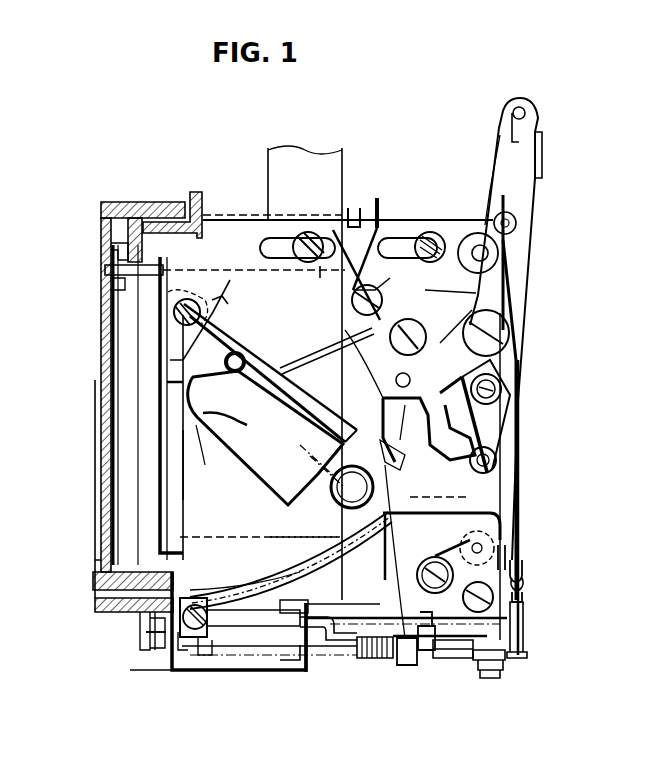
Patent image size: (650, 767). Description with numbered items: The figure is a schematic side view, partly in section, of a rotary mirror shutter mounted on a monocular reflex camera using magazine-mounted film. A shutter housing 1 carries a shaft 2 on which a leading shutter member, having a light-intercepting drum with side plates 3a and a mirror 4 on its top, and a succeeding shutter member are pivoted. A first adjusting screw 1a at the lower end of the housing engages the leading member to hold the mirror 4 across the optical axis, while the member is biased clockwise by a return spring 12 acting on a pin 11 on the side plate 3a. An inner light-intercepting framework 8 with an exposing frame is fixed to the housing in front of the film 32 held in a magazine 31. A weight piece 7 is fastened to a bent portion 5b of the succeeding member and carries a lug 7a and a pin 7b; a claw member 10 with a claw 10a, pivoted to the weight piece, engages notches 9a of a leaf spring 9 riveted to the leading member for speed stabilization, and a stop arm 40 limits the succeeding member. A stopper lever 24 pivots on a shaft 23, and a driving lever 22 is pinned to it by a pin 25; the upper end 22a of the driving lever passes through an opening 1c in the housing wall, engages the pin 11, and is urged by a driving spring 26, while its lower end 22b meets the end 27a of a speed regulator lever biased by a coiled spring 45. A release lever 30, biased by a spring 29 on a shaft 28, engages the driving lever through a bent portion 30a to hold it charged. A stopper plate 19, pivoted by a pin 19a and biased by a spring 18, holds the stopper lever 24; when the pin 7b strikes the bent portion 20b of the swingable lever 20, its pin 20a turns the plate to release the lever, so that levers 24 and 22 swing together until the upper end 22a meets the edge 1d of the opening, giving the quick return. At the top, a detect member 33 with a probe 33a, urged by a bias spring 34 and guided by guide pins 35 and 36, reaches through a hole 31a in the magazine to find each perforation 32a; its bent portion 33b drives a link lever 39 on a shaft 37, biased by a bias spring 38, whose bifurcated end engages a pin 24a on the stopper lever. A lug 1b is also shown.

The shutter housing 1 is at (233, 216).
The first adjusting screw 1a is at (142, 630).
The frame bottom lug 1b is at (150, 630).
The opening 1c is at (252, 475).
The edge of the opening 1d is at (218, 425).
The shaft 2 is at (173, 314).
The light-intercepting side plates 3a is at (230, 328).
The mirror 4 is at (228, 304).
The bent portion 5b is at (157, 645).
The weight piece 7 is at (195, 640).
The lug 7a is at (183, 648).
The pin 7b is at (206, 650).
The inner light-intercepting framework 8 is at (158, 482).
The leaf spring 9 is at (262, 615).
The notches 9a is at (258, 595).
The claw member 10 is at (256, 620).
The claw 10a is at (255, 610).
The pin 11 is at (225, 360).
The return spring 12 is at (300, 362).
The spring 18 is at (490, 440).
The stopper plate 19 is at (492, 420).
The pin 19a is at (500, 390).
The swingable lever 20 is at (464, 548).
The pin 20a is at (496, 460).
The bent portion 20b is at (470, 485).
The driving lever 22 is at (262, 425).
The upper end of the driving lever 22a is at (200, 425).
The lower end of the driving lever 22b is at (400, 666).
The shaft 23 is at (485, 680).
The stopper lever 24 is at (358, 405).
The pin 24a is at (399, 426).
The pin 25 is at (340, 500).
The driving spring 26 is at (440, 660).
The end of the speed regulator lever 27a is at (426, 652).
The shaft 28 is at (493, 598).
The spring 29 is at (523, 574).
The release lever 30 is at (500, 500).
The bent portion 30a is at (506, 525).
The magazine 31 is at (120, 202).
The hole 31a is at (103, 225).
The film 32 is at (110, 408).
The perforation 32a is at (105, 282).
The detect member 33 is at (305, 165).
The probe 33a is at (103, 262).
The bent portion 33b is at (425, 215).
The bias spring 34 is at (415, 228).
The guide pin 35 is at (308, 230).
The guide pin 36 is at (490, 200).
The shaft 37 is at (352, 305).
The bias spring 38 is at (350, 225).
The link lever 39 is at (370, 215).
The stop arm 40 is at (288, 665).
The coiled spring 45 is at (360, 660).